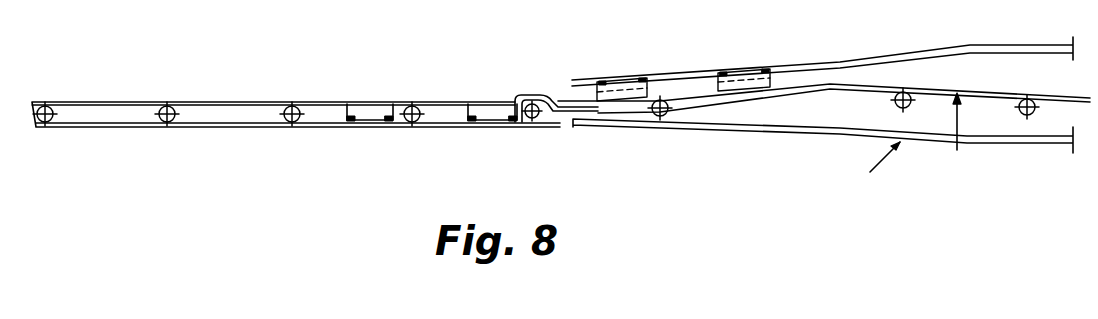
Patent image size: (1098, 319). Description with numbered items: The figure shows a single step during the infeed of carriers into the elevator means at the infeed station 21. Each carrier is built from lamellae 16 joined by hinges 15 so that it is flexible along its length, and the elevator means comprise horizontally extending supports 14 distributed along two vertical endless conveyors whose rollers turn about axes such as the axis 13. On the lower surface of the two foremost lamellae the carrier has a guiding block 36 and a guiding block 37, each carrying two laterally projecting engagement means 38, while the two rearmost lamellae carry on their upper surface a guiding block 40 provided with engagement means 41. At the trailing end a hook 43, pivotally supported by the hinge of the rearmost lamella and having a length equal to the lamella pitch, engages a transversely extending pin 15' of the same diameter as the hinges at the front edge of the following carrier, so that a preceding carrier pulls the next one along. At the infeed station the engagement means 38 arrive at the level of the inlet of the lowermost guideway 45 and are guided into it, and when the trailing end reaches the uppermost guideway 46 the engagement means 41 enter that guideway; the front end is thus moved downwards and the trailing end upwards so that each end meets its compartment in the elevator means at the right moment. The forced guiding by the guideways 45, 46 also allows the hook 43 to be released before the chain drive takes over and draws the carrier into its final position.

The axis 13 is at (962, 133).
The support 14 is at (200, 128).
The hinge 15 is at (552, 129).
The transversely extending pin 15' is at (556, 133).
The lamella 16 is at (1010, 92).
The infeed station 21 is at (875, 168).
The guiding block 36 is at (362, 104).
The guiding block 37 is at (480, 105).
The engagement means 38 is at (517, 143).
The guiding block 40 is at (740, 75).
The engagement means 41 is at (763, 70).
The hook 43 is at (532, 98).
The lowermost guideway 45 is at (797, 132).
The uppermost guideway 46 is at (840, 62).